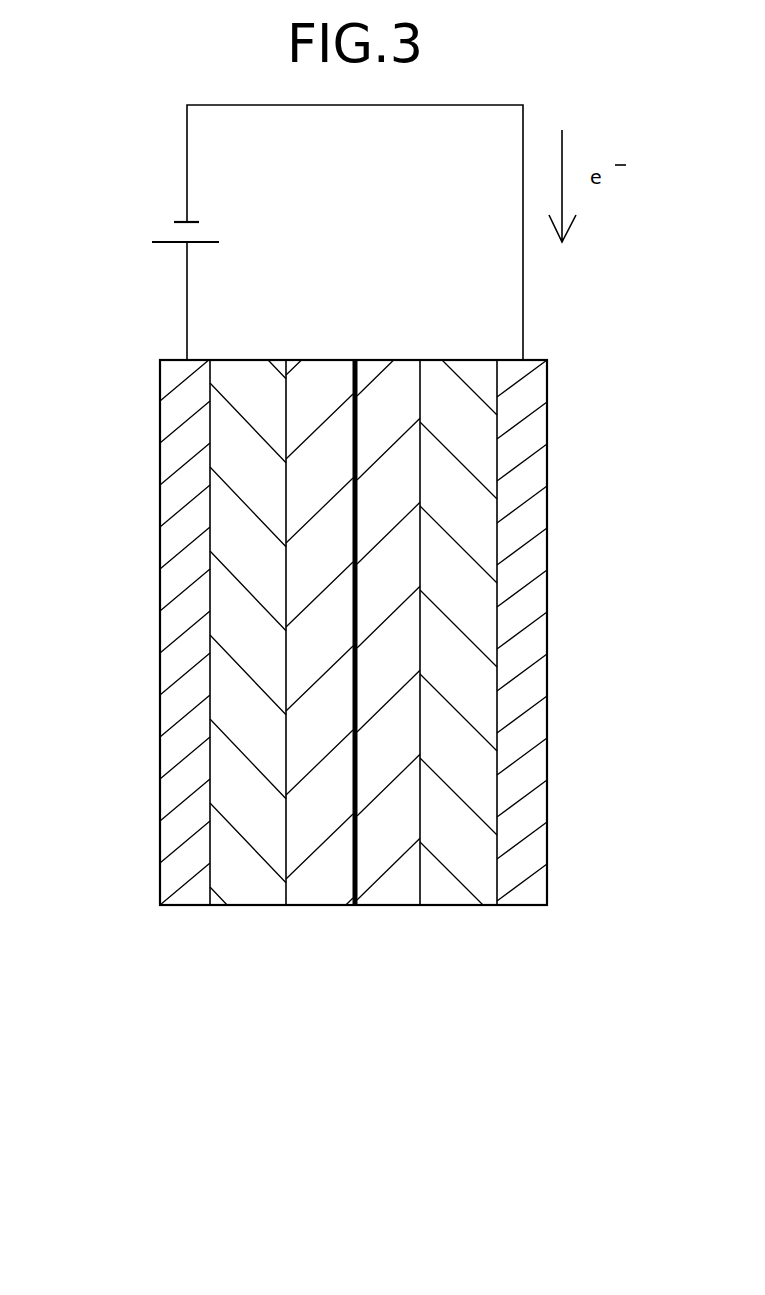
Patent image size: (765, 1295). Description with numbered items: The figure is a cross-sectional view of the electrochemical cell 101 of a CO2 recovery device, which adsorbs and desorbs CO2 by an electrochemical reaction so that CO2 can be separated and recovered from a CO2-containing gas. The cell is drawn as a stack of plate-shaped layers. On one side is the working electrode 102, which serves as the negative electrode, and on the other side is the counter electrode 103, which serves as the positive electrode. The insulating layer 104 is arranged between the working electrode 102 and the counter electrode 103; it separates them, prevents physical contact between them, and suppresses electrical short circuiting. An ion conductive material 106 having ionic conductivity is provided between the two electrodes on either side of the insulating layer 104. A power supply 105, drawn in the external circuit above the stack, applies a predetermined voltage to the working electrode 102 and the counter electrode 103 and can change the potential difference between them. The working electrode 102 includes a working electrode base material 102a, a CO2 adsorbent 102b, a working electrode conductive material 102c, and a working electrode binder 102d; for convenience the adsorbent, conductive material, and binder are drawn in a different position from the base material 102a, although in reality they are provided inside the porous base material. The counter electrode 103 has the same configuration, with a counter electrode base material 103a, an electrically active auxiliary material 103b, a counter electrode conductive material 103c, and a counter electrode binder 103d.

The electrochemical cell 101 is at (337, 335).
The working electrode 102 is at (630, 1108).
The working electrode base material 102a is at (520, 905).
The CO2 adsorbent 102b is at (458, 905).
The working electrode conductive material 102c is at (475, 739).
The working electrode binder 102d is at (472, 739).
The counter electrode 103 is at (277, 1108).
The counter electrode base material 103a is at (190, 905).
The electrically active auxiliary material 103b is at (248, 905).
The counter electrode conductive material 103c is at (239, 739).
The counter electrode binder 103d is at (239, 739).
The insulating layer 104 is at (353, 905).
The power supply 105 is at (170, 243).
The ion conductive material 106 is at (320, 905).